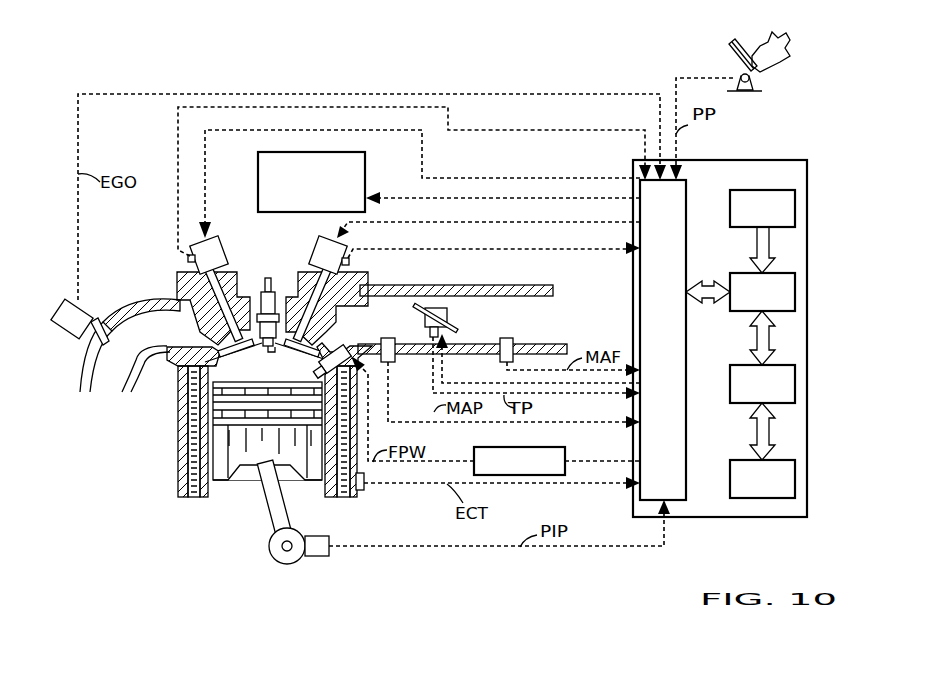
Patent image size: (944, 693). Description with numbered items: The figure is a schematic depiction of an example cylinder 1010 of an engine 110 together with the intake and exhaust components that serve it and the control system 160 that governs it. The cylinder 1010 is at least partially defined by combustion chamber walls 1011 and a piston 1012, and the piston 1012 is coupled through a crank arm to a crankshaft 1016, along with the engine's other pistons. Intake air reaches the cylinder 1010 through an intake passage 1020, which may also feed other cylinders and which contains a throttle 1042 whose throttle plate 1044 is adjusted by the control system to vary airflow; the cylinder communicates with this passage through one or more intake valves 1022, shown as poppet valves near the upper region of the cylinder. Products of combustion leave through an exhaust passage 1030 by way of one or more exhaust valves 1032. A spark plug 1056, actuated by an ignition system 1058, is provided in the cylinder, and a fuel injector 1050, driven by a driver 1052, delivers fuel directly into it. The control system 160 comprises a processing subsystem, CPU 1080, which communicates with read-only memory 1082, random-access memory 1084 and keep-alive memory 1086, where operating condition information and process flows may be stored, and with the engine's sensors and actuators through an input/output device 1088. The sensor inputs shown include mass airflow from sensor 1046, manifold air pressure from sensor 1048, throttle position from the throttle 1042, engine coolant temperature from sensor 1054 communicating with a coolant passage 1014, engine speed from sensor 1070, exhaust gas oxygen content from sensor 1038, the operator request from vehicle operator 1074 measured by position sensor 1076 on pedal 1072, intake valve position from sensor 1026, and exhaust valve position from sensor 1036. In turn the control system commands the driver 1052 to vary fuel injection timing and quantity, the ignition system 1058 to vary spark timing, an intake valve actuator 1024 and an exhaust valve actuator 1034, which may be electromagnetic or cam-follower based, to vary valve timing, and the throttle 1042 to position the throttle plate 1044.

The engine 110 is at (127, 452).
The control system 160 is at (710, 161).
The cylinder 1010 is at (195, 368).
The combustion chamber walls 1011 is at (214, 490).
The piston 1012 is at (252, 452).
The coolant passage 1014 is at (346, 496).
The crankshaft 1016 is at (273, 560).
The intake passage 1020 is at (523, 327).
The intake valve 1022 is at (306, 340).
The intake valve actuator 1024 is at (318, 247).
The intake valve position sensor 1026 is at (352, 263).
The exhaust passage 1030 is at (172, 335).
The exhaust valve 1032 is at (226, 340).
The exhaust valve actuator 1034 is at (215, 252).
The exhaust valve position sensor 1036 is at (190, 257).
The exhaust gas oxygen sensor 1038 is at (77, 338).
The throttle 1042 is at (445, 308).
The throttle plate 1044 is at (428, 305).
The mass airflow sensor 1046 is at (500, 359).
The manifold air pressure sensor 1048 is at (396, 362).
The fuel injector 1050 is at (341, 352).
The driver 1052 is at (566, 453).
The engine coolant temperature sensor 1054 is at (366, 492).
The spark plug 1056 is at (263, 296).
The ignition system 1058 is at (366, 172).
The engine speed sensor 1070 is at (320, 558).
The pedal 1072 is at (728, 55).
The vehicle operator 1074 is at (776, 44).
The position sensor 1076 is at (756, 80).
The processing subsystem (CPU) 1080 is at (732, 273).
The read-only memory (ROM) 1082 is at (731, 191).
The random-access memory (RAM) 1084 is at (732, 365).
The keep-alive memory (KAM) 1086 is at (732, 460).
The input/output device 1088 is at (686, 462).